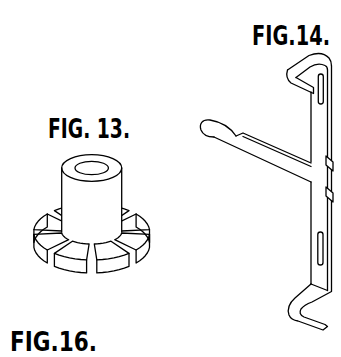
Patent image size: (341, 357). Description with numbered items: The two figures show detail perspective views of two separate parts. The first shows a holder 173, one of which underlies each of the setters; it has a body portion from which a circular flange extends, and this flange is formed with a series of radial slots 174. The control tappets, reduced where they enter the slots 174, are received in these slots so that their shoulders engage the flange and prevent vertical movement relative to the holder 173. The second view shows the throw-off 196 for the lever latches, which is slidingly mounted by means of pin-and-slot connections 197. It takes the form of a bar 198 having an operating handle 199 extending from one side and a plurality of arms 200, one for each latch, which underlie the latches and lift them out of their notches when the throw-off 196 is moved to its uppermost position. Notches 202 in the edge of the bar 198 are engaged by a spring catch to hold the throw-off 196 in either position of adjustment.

In FIG. 13, the holder 173 is at (92, 193).
In FIG. 13, the radial slots 174 is at (87, 266).
In FIG. 14, the throw-off 196 is at (280, 160).
In FIG. 14, the pin-and-slot connections 197 is at (318, 104).
In FIG. 14, the bar 198 is at (320, 216).
In FIG. 14, the operating handle 199 is at (216, 134).
In FIG. 14, the arms 200 is at (302, 82).
In FIG. 14, the notches 202 is at (322, 196).